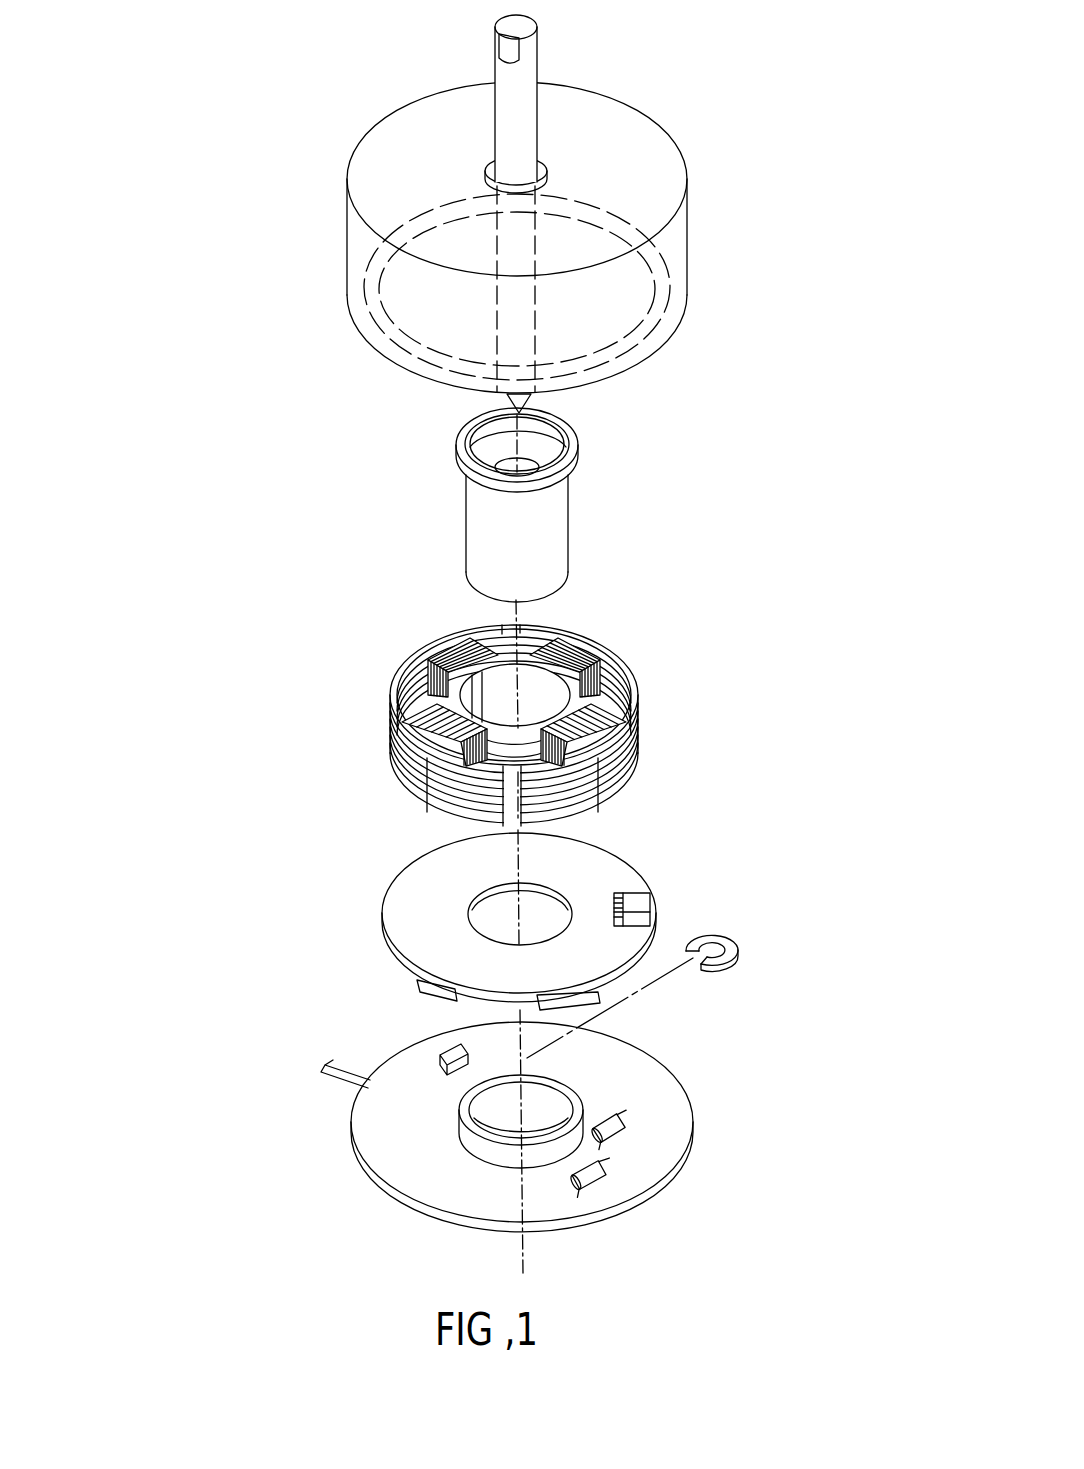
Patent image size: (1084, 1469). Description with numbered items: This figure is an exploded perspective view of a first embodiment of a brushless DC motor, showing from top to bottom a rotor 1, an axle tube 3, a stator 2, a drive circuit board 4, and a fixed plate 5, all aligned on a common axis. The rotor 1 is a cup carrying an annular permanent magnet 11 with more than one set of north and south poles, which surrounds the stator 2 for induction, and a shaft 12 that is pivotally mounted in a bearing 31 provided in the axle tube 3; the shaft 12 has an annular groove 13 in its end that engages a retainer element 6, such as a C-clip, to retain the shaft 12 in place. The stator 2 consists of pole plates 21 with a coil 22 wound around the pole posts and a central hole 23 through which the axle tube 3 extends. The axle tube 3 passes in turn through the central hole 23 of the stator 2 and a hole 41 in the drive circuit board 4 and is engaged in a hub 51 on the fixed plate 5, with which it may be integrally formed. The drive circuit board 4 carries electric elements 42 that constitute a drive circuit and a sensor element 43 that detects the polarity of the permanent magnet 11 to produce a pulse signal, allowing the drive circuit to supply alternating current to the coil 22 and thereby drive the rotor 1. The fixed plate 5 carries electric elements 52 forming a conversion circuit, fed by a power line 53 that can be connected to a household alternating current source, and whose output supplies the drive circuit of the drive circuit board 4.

The rotor 1 is at (666, 166).
The permanent magnet 11 is at (657, 325).
The shaft 12 is at (540, 310).
The annular groove 13 is at (560, 392).
The stator 2 is at (524, 707).
The pole plates 21 is at (633, 747).
The coil 22 is at (596, 662).
The central hole 23 is at (498, 682).
The axle tube 3 is at (554, 505).
The bearing 31 is at (545, 457).
The drive circuit board 4 is at (523, 919).
The hole 41 is at (492, 920).
The electric elements 42 is at (417, 985).
The sensor element 43 is at (640, 905).
The fixed plate 5 is at (500, 1132).
The hub 51 is at (532, 1130).
The electric elements 52 is at (440, 1057).
The power line 53 is at (333, 1085).
The retainer element 6 is at (734, 943).